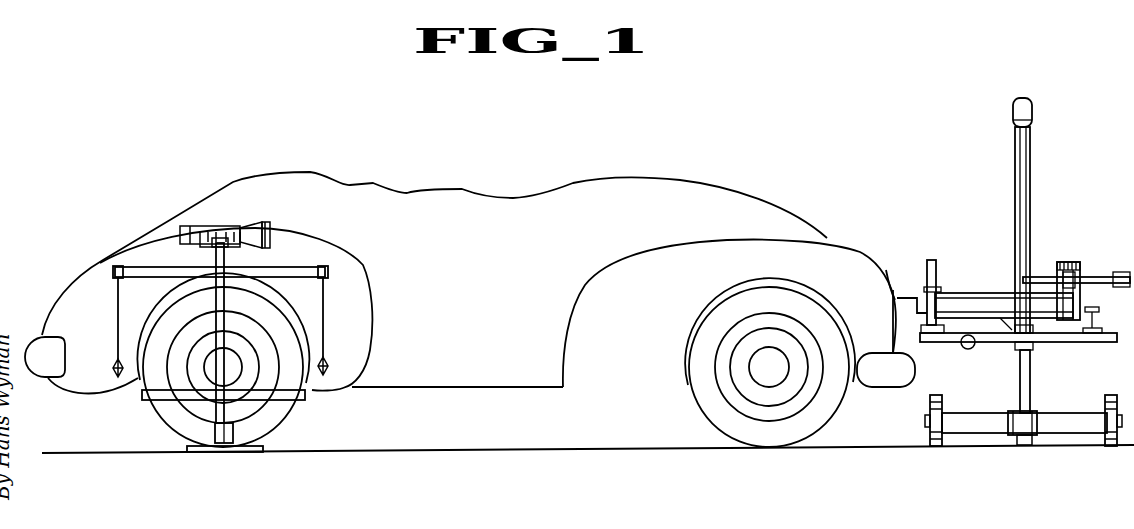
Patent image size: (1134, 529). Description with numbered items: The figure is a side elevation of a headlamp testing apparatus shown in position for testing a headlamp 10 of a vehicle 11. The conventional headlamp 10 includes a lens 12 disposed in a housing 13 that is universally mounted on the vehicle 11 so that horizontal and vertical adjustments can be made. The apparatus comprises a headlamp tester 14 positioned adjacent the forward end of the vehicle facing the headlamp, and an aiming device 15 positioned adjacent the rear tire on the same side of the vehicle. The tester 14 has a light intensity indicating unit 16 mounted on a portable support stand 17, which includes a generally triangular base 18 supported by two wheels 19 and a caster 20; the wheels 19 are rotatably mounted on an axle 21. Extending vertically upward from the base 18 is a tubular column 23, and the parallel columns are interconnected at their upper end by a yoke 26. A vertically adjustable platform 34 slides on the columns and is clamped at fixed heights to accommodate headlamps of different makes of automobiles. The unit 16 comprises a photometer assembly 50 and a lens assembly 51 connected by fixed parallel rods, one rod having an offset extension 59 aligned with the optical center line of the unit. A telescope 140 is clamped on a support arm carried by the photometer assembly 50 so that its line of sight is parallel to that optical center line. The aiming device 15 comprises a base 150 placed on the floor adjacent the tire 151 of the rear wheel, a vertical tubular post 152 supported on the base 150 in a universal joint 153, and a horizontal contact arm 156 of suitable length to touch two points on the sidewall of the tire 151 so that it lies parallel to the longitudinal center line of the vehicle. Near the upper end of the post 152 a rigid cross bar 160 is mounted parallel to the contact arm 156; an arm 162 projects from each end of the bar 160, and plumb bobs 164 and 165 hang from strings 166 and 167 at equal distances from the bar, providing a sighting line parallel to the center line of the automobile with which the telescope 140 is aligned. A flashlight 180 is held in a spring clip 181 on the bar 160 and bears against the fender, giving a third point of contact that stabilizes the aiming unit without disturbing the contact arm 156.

The headlamp 10 is at (992, 292).
The vehicle 11 is at (690, 170).
The lens 12 is at (893, 293).
The housing 13 is at (888, 272).
The headlamp tester 14 is at (1060, 251).
The aiming device 15 is at (228, 318).
The light intensity indicating unit 16 is at (1080, 257).
The portable support stand 17 is at (981, 435).
The triangular base 18 is at (970, 420).
The wheels 19 is at (933, 410).
The caster 20 is at (1023, 441).
The axle 21 is at (928, 422).
The tubular column 23 is at (1024, 217).
The yoke 26 is at (1022, 113).
The vertically adjustable platform 34 is at (1068, 338).
The photometer assembly 50 is at (1088, 297).
The lens assembly 51 is at (941, 264).
The offset extension 59 is at (913, 309).
The telescope 140 is at (1093, 278).
The base 150 is at (252, 443).
The tire 151 is at (272, 415).
The vertical tubular post 152 is at (220, 316).
The universal joint 153 is at (222, 434).
The horizontal contact arm 156 is at (180, 396).
The rigid cross bar 160 is at (300, 263).
The arm 162 is at (113, 268).
The plumb bob 164 is at (115, 365).
The plumb bob 165 is at (328, 362).
The string 166 is at (118, 307).
The string 167 is at (325, 297).
The flashlight 180 is at (248, 228).
The spring clip 181 is at (216, 244).